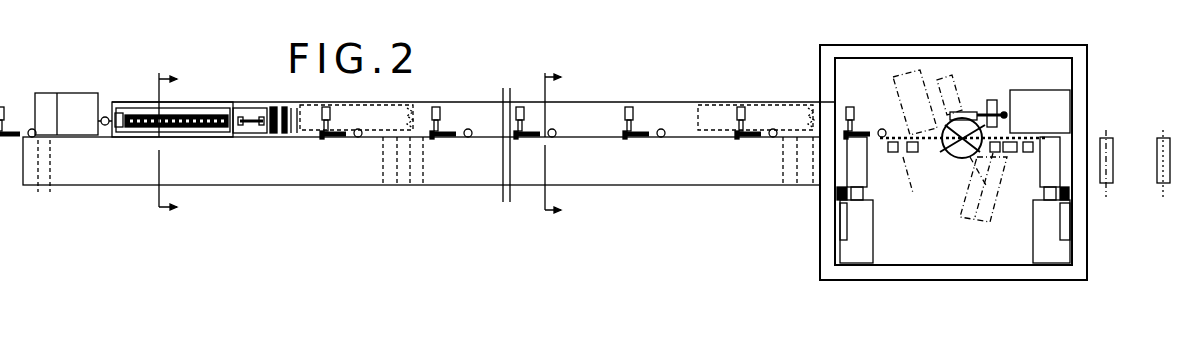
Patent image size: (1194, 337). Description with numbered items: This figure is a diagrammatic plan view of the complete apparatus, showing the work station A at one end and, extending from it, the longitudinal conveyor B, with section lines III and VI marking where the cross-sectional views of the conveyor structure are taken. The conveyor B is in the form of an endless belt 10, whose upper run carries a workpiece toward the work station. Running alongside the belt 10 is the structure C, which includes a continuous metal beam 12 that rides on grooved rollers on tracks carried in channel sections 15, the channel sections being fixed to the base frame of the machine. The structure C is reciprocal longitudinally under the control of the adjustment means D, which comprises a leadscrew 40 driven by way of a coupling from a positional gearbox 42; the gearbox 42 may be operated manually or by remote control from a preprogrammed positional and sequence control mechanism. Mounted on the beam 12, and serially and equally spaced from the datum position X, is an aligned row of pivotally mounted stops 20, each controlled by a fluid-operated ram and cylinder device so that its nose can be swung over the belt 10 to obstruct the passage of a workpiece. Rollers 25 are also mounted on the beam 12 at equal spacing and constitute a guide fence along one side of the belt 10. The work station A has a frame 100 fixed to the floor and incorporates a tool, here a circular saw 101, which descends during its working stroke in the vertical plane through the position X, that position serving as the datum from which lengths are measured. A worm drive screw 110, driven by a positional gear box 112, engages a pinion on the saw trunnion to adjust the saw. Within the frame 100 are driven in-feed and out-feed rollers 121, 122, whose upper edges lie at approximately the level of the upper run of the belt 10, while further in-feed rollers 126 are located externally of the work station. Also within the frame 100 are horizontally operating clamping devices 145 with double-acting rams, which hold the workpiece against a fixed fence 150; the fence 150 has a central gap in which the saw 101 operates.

The endless belt 10 is at (590, 163).
The continuous metal beam 12 is at (550, 117).
The channel sections 15 is at (378, 106).
The stops 20 is at (346, 132).
The rollers 25 is at (357, 137).
The leadscrew 40 is at (142, 115).
The positional gearbox 42 is at (80, 108).
The frame 100 is at (1030, 52).
The circular saw 101 is at (914, 210).
The worm drive screw 110 is at (970, 113).
The positional gear box 112 is at (1040, 111).
The in-feed rollers 121 is at (1111, 147).
The out-feed rollers 122 is at (850, 157).
The in-feed rollers 126 is at (1158, 135).
The horizontally operating clamping devices 145 is at (837, 207).
The fixed fence 150 is at (897, 133).
The work station A is at (1087, 81).
The longitudinal conveyor B is at (693, 167).
The structure C is at (673, 102).
The adjustment means D is at (176, 102).
The datum position X is at (983, 110).
The section line VI is at (153, 54).
The section line III is at (537, 54).